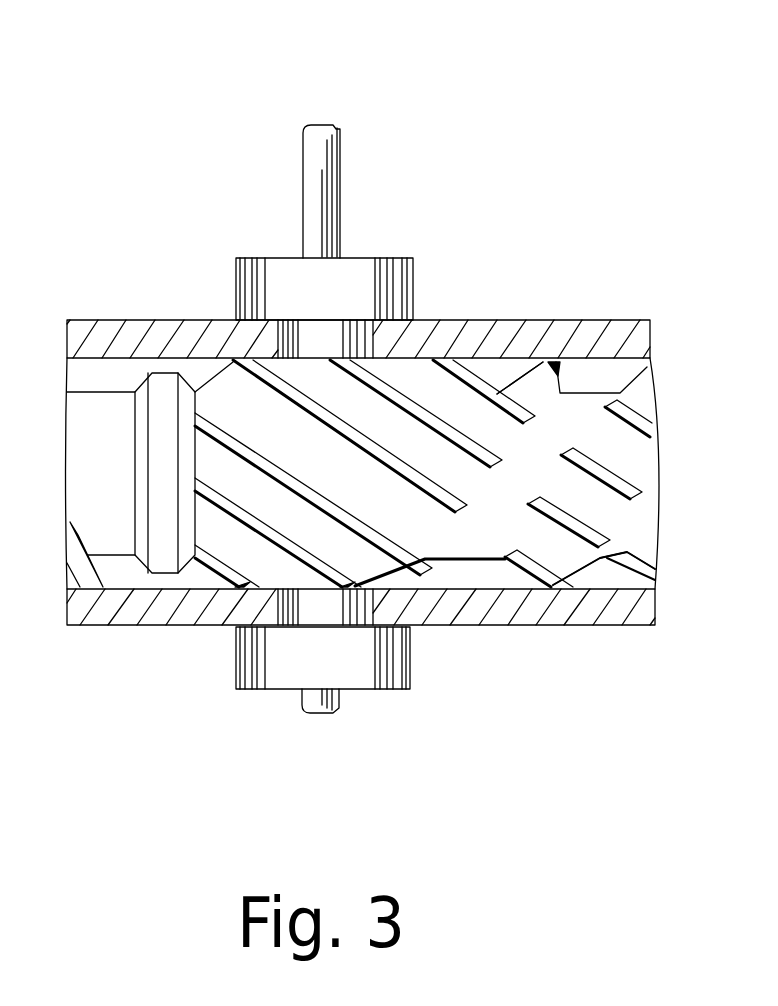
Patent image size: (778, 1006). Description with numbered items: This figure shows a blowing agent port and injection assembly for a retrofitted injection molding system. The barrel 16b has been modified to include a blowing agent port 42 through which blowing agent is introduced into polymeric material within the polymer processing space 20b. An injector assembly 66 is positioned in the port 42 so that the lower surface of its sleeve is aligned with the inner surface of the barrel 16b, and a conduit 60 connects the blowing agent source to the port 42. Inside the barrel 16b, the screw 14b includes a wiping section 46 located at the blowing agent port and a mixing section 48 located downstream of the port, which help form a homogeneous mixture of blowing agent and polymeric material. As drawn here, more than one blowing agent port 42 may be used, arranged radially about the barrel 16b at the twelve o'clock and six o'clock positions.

The screw 14b is at (223, 398).
The barrel 16b is at (218, 318).
The polymer processing space 20b is at (498, 370).
The blowing agent port 42 is at (430, 330).
The wiping section 46 is at (275, 478).
The mixing section 48 is at (622, 580).
The conduit 60 is at (302, 143).
The injector assembly 66 is at (365, 222).